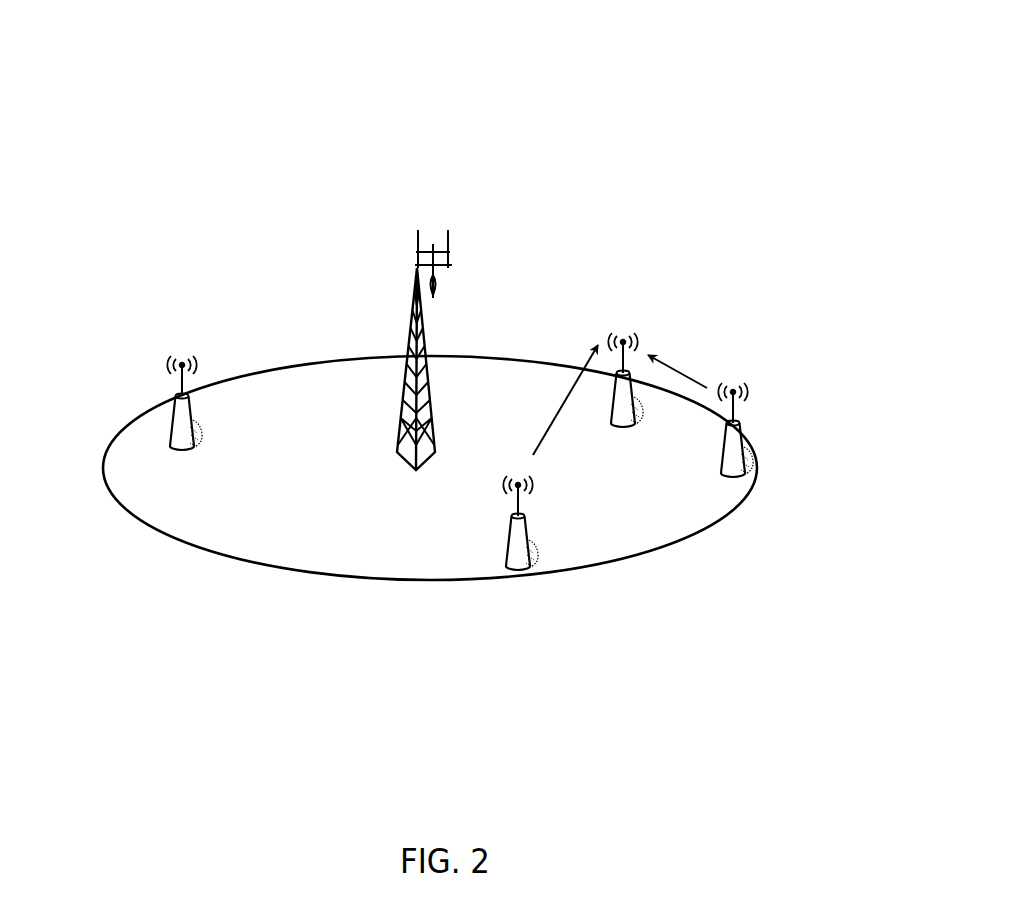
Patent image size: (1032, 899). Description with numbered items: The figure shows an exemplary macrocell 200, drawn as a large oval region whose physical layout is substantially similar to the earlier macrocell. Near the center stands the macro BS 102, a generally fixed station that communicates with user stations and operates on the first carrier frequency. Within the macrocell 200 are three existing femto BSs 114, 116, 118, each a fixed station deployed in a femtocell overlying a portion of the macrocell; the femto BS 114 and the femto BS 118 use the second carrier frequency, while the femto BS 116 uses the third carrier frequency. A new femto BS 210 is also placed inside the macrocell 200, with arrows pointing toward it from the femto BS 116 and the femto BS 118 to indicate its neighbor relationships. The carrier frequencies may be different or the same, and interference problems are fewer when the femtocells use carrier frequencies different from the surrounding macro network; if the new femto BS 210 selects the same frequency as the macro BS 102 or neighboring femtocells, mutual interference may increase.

The macrocell 200 is at (567, 112).
The macro BS 102 is at (421, 322).
The femto BS 114 is at (147, 375).
The femto BS 116 is at (532, 484).
The femto BS 118 is at (826, 416).
The new femto BS 210 is at (659, 348).